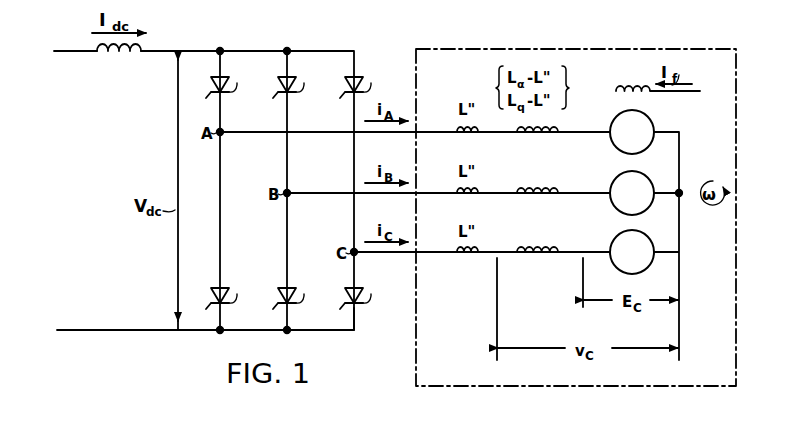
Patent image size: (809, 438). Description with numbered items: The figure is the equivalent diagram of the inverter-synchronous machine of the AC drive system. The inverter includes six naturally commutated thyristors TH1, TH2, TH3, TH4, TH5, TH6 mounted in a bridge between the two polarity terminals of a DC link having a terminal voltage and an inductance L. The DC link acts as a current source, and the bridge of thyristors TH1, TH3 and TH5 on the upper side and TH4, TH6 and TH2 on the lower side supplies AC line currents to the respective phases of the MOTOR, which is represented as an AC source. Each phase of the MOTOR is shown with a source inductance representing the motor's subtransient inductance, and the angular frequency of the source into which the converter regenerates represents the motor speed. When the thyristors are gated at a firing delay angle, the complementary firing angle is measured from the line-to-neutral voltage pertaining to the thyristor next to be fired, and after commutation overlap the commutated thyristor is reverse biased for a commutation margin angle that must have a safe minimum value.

The thyristor TH1 is at (238, 80).
The thyristor TH2 is at (305, 288).
The thyristor TH3 is at (305, 80).
The thyristor TH4 is at (371, 306).
The thyristor TH5 is at (371, 74).
The thyristor TH6 is at (238, 288).
The inductance L is at (109, 57).
The motor MOTOR is at (576, 232).